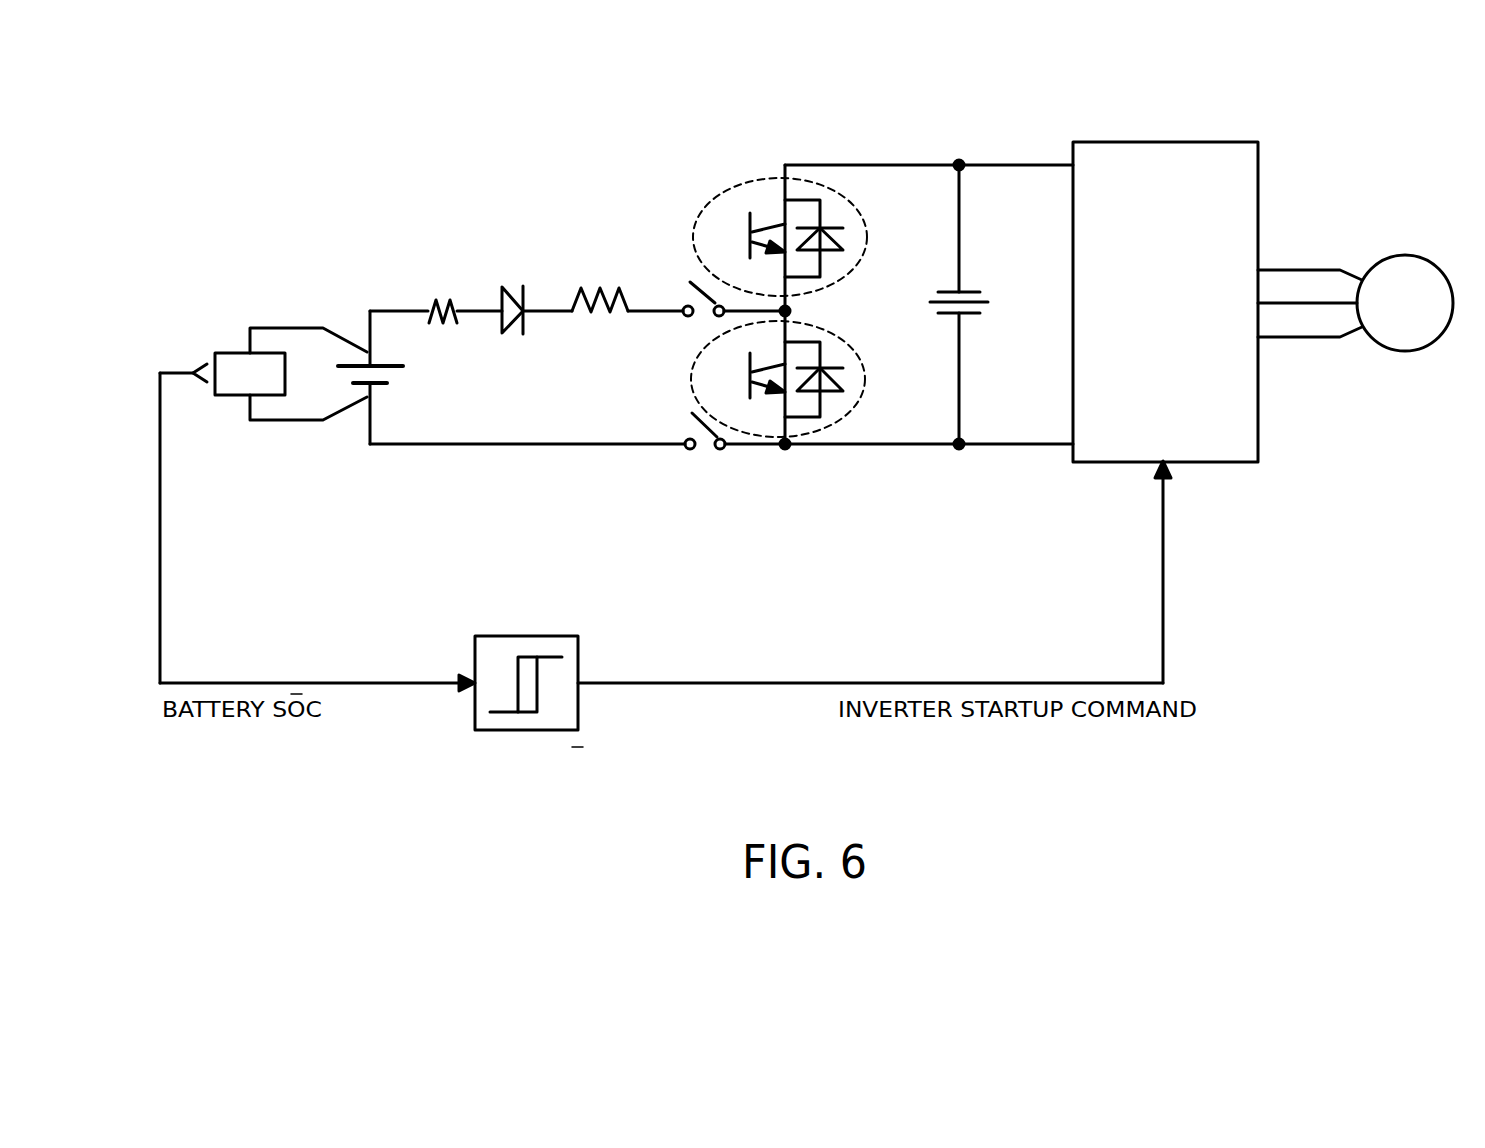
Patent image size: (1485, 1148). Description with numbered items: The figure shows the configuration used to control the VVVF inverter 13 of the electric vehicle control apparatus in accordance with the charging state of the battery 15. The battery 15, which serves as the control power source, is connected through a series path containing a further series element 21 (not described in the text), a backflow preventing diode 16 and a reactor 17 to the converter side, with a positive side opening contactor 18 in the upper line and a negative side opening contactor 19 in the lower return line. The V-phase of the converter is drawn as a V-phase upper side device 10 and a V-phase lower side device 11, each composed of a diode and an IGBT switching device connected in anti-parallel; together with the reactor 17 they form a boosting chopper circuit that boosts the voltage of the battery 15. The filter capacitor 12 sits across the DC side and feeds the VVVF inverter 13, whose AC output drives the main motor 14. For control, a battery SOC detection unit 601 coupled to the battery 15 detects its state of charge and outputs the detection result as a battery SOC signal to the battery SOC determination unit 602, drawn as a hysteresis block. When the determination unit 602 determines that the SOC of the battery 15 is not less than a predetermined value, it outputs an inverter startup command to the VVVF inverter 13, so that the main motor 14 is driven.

The V-phase upper side device 10 is at (865, 212).
The V-phase lower side device 11 is at (865, 357).
The filter capacitor 12 is at (970, 290).
The VVVF inverter 13 is at (1213, 141).
The main motor 14 is at (1403, 255).
The battery 15 is at (395, 375).
The backflow preventing diode 16 is at (502, 285).
The reactor 17 is at (600, 290).
The positive side opening contactor 18 is at (686, 276).
The negative side opening contactor 19 is at (704, 453).
The fuse 21 is at (437, 298).
The battery SOC detection unit 601 is at (228, 352).
The battery SOC determination unit 602 is at (527, 635).